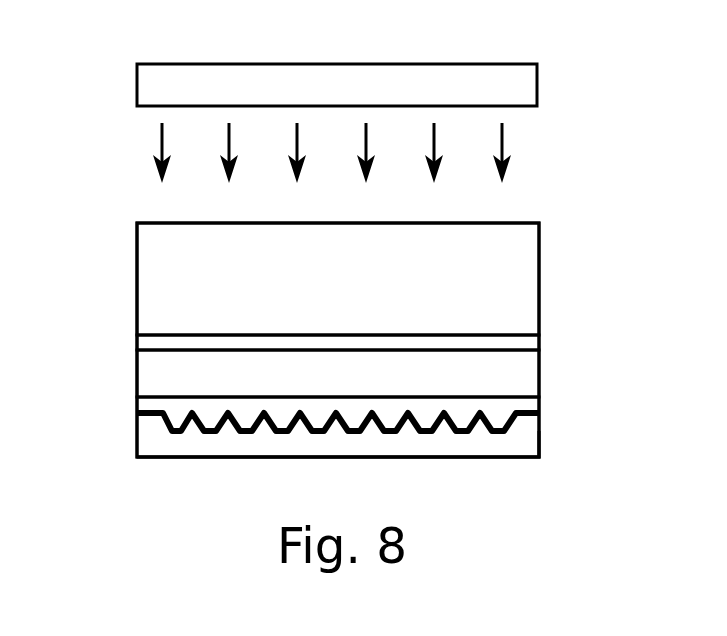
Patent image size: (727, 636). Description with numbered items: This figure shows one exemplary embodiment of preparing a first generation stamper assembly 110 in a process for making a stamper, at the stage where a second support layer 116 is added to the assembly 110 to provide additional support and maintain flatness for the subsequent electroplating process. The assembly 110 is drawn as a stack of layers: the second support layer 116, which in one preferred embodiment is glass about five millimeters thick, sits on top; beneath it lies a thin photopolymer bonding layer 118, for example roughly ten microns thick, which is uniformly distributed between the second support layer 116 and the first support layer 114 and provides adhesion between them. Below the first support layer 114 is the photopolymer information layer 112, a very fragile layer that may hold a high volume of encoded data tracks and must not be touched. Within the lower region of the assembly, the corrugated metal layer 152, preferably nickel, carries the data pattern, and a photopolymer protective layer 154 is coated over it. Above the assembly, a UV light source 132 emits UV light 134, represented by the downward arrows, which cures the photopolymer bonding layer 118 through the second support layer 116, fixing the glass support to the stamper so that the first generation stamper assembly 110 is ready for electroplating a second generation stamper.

The first generation stamper assembly 110 is at (86, 505).
The photopolymer information layer 112 is at (539, 403).
The first support layer 114 is at (539, 368).
The second support layer 116 is at (539, 249).
The photopolymer bonding layer 118 is at (539, 338).
The UV light source 132 is at (362, 64).
The UV light 134 is at (503, 135).
The metal layer 152 is at (169, 433).
The protective layer 154 is at (515, 442).